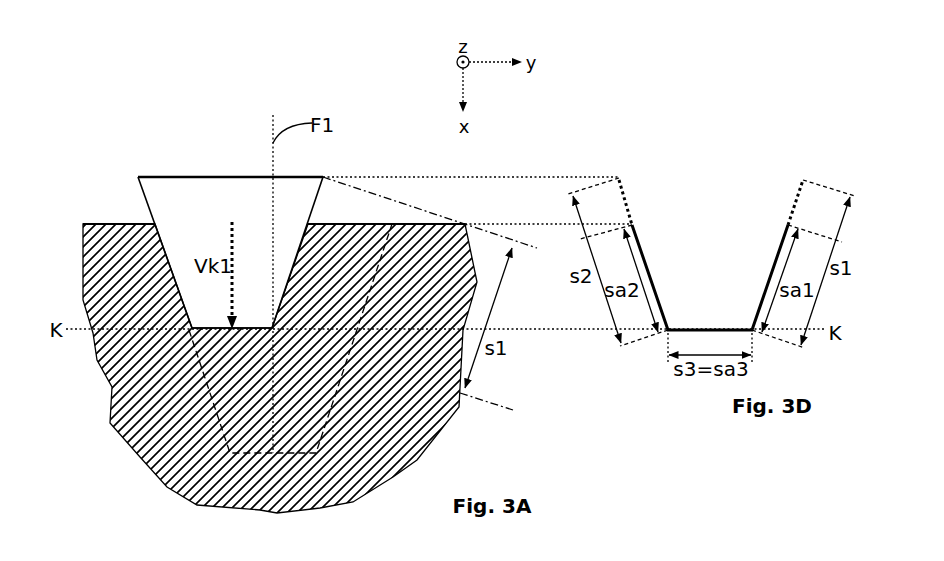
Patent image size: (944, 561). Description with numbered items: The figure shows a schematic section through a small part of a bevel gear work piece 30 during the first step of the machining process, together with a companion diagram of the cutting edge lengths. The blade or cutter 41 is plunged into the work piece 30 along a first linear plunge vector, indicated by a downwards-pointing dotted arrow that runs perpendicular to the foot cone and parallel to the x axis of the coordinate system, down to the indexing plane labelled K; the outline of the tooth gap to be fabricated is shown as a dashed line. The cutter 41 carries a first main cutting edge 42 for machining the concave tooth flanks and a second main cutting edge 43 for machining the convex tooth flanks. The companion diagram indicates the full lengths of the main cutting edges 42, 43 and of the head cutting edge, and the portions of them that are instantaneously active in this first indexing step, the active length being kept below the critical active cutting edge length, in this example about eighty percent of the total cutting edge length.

The work piece 30 is at (132, 415).
The blade or cutter 41 is at (244, 203).
The first main cutting edge 42 is at (143, 212).
The second main cutting edge 43 is at (313, 208).